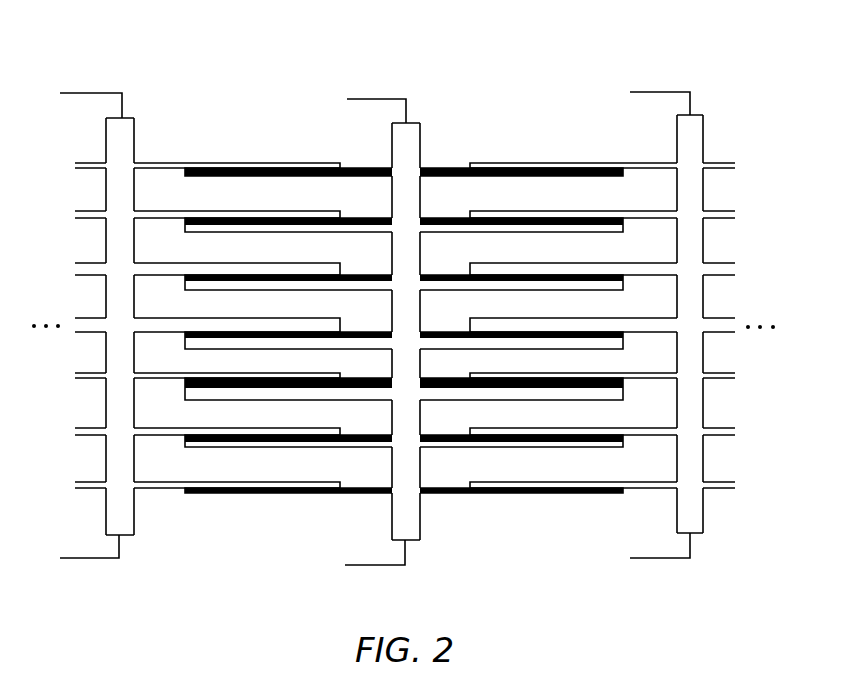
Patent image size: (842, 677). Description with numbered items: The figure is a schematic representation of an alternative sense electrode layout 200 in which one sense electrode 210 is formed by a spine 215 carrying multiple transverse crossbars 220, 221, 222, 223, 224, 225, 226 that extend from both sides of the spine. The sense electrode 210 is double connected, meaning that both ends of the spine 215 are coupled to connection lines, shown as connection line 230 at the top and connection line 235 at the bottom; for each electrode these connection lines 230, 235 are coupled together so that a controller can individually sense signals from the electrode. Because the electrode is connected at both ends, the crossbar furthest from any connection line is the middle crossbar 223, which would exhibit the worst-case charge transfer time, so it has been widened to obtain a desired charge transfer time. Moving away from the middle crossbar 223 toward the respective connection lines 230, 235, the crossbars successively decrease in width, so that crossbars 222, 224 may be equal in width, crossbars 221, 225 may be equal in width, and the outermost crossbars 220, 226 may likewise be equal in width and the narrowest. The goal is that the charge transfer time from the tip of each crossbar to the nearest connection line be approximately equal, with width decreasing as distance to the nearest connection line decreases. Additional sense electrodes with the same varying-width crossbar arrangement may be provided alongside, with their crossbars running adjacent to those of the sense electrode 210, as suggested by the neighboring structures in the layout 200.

The sense electrode layout 200 is at (545, 56).
The sense electrode 210 is at (421, 136).
The spine 215 is at (421, 318).
The crossbar 220 is at (526, 177).
The crossbar 221 is at (526, 226).
The crossbar 222 is at (526, 282).
The middle crossbar 223 is at (526, 339).
The crossbar 224 is at (526, 389).
The crossbar 225 is at (526, 443).
The crossbar 226 is at (526, 494).
The connection line 230 is at (376, 99).
The connection line 235 is at (375, 566).